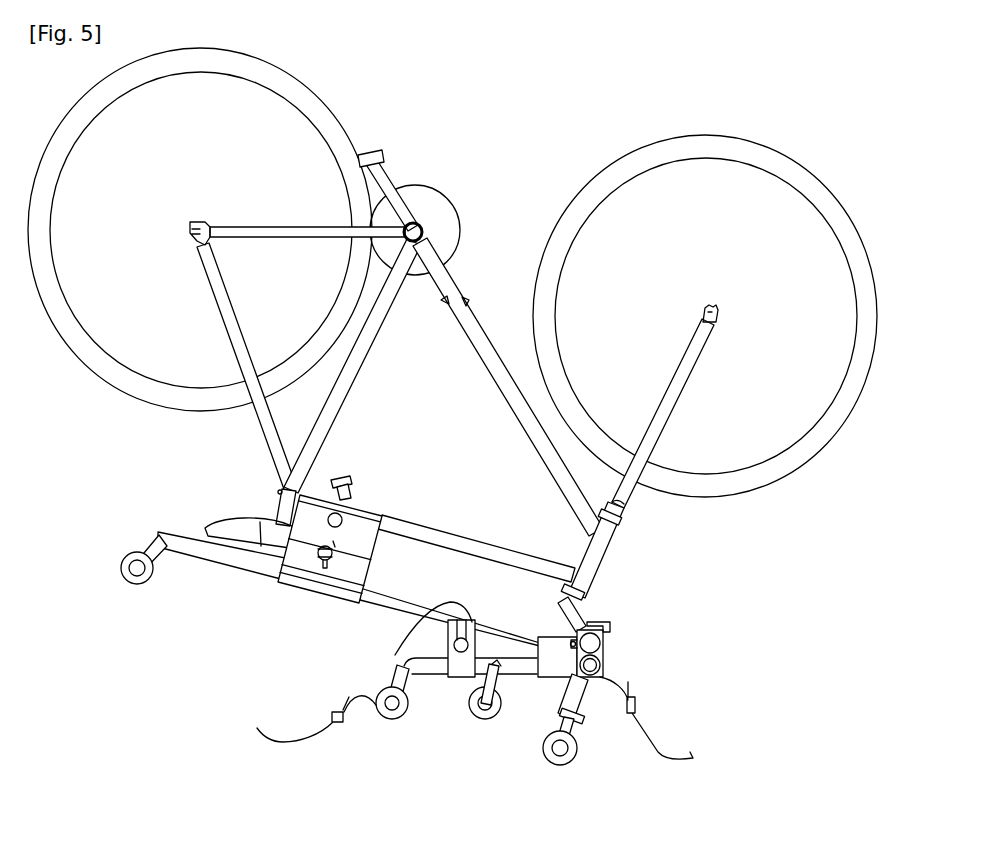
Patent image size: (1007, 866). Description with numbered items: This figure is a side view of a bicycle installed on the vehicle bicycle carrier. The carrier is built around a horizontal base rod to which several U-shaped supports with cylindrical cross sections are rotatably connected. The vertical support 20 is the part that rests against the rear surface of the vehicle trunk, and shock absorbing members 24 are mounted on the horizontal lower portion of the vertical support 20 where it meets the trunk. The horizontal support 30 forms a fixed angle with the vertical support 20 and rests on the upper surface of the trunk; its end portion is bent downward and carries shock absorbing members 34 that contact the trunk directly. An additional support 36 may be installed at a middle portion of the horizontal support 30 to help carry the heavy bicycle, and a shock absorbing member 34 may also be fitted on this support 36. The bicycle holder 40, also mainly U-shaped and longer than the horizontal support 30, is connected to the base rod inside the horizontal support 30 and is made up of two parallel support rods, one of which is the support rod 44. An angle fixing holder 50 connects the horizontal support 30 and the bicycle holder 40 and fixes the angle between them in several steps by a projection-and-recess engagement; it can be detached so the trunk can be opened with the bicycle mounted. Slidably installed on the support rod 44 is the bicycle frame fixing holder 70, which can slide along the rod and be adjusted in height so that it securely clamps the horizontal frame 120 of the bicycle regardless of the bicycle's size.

The vertical support 20 is at (572, 724).
The shock absorbing members 24 is at (577, 765).
The horizontal support 30 is at (403, 680).
The shock absorbing members 34 is at (377, 712).
The support 36 is at (496, 688).
The bicycle holder 40 is at (214, 565).
The support rod 44 is at (126, 578).
The angle fixing holder 50 is at (447, 632).
The bicycle frame fixing holder 70 is at (361, 558).
The horizontal frame 120 is at (367, 500).